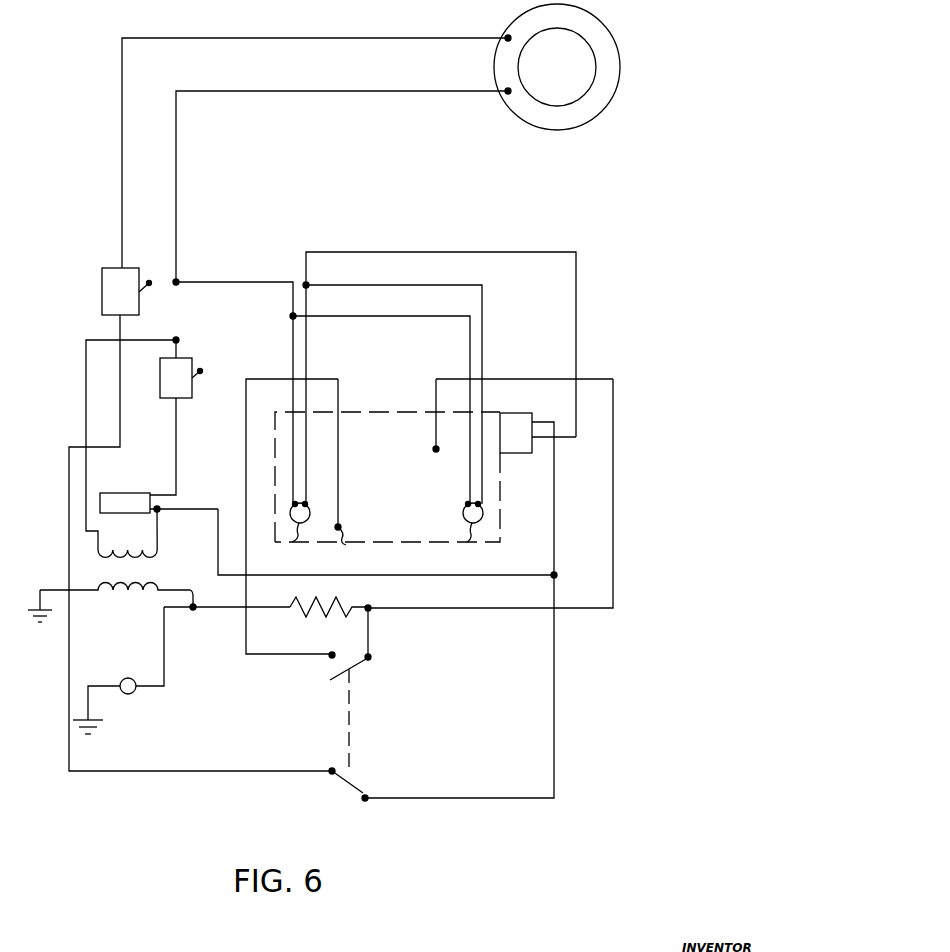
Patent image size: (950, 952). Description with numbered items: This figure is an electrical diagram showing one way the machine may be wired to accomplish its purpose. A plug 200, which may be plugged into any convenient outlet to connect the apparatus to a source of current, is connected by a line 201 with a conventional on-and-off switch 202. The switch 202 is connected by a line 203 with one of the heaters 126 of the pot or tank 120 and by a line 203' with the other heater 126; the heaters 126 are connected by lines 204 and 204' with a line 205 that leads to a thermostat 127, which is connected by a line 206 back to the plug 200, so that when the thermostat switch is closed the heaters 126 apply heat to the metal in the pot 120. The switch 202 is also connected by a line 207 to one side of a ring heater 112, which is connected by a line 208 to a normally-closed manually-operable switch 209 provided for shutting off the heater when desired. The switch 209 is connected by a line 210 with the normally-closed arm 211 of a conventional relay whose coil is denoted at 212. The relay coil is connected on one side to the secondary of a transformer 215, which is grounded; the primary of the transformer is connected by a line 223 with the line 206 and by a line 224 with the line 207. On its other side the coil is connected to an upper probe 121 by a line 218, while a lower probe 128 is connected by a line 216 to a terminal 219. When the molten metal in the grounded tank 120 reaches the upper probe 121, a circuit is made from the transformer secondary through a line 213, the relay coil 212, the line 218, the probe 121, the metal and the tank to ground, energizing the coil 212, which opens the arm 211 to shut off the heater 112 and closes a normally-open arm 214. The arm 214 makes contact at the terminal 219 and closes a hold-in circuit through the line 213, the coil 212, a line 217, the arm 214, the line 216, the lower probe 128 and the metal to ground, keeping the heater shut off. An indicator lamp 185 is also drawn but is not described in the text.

The ring heater 112 is at (619, 55).
The line 208 is at (352, 38).
The line 207 is at (342, 92).
The normally-closed manually-operable switch 209 is at (105, 288).
The line 205 is at (576, 303).
The line 203 is at (233, 391).
The line 204 is at (330, 312).
The line 203' is at (380, 408).
The line 204' is at (422, 394).
The line 224 is at (86, 395).
The on-and-off switch 202 is at (168, 392).
The line 201 is at (176, 465).
The plug 200 is at (137, 513).
The line 223 is at (160, 522).
The transformer 215 is at (163, 571).
The line 210 is at (70, 622).
The line 213 is at (237, 607).
The line 206 is at (186, 511).
The line 218 is at (612, 506).
The line 216 is at (246, 628).
The relay coil 212 is at (313, 612).
The line 217 is at (369, 636).
The terminal 219 is at (330, 664).
The normally-open relay arm 214 is at (358, 663).
The normally-closed relay arm 211 is at (345, 787).
The indicator lamp 185 is at (134, 692).
The pot or tank 120 is at (500, 530).
The thermostat 127 is at (517, 453).
The upper probe 121 is at (436, 449).
The heaters 126 is at (384, 536).
The lower probe 128 is at (355, 474).